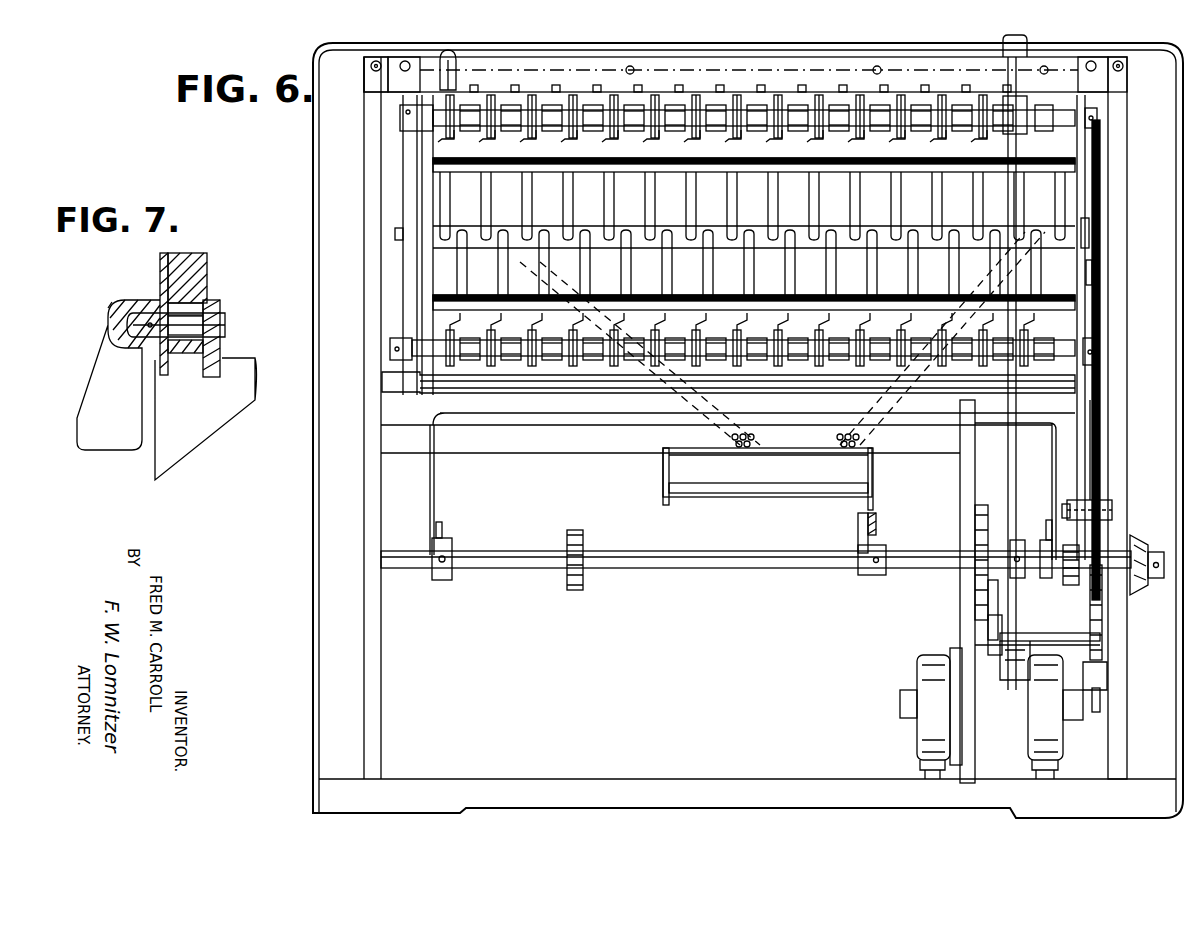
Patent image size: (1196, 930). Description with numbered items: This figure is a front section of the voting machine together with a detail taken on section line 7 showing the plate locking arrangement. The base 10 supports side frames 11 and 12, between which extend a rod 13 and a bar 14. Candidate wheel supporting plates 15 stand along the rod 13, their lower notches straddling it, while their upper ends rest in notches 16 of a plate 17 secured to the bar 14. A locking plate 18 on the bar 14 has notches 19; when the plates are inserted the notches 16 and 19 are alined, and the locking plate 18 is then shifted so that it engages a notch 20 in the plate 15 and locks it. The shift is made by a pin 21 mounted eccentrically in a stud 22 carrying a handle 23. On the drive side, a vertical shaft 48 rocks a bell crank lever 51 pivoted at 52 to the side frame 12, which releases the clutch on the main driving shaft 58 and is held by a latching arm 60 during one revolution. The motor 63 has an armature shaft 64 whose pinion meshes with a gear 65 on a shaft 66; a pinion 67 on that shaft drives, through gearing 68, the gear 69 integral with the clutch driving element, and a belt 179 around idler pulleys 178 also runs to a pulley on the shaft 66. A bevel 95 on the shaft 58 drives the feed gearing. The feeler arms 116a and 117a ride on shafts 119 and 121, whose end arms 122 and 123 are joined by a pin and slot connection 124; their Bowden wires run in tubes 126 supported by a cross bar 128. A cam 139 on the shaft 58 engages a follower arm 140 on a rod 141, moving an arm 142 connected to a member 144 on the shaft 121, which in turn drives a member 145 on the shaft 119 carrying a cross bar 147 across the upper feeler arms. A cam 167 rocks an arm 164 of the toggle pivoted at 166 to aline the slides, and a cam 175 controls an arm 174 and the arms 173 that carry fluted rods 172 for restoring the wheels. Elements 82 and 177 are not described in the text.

In FIG. 6, the section line 7— 7 is at (475, 34).
In FIG. 6, the base 10 is at (668, 795).
In FIG. 6, the side frame 11 is at (372, 425).
In FIG. 6, the side frame 12 is at (1118, 205).
In FIG. 6, the rod 13 is at (622, 383).
In FIG. 6, the bar 14 is at (372, 66).
In FIG. 7, the bar 14 is at (185, 265).
In FIG. 7, the candidate wheel supporting plate 15 is at (200, 430).
In FIG. 6, the notch 16 is at (658, 90).
In FIG. 6, the plate 17 is at (600, 75).
In FIG. 7, the plate 17 is at (158, 278).
In FIG. 7, the locking plate 18 is at (222, 312).
In FIG. 6, the notch 19 is at (540, 85).
In FIG. 7, the notch 20 is at (248, 368).
In FIG. 7, the pin 21 is at (228, 332).
In FIG. 7, the stud 22 is at (186, 355).
In FIG. 6, the handle 23 is at (455, 72).
In FIG. 7, the handle 23 is at (118, 390).
In FIG. 6, the vertical shaft 48 is at (1015, 455).
In FIG. 6, the bell crank lever 51 is at (1062, 640).
In FIG. 6, the pivot 52 is at (1103, 640).
In FIG. 6, the main driving shaft 58 is at (632, 568).
In FIG. 6, the latching arm 60 is at (1020, 648).
In FIG. 6, the motor 63 is at (917, 668).
In FIG. 6, the armature shaft 64 is at (1094, 712).
In FIG. 6, the gear 65 is at (1104, 616).
In FIG. 6, the shaft 66 is at (1030, 630).
In FIG. 6, the pinion 67 is at (985, 637).
In FIG. 6, the gearing 68 is at (975, 605).
In FIG. 6, the gear 69 is at (975, 520).
In FIG. 6, the bevel gear 82 is at (1142, 555).
In FIG. 6, the bevel gear 95 is at (580, 540).
In FIG. 6, the arm 116a is at (600, 230).
In FIG. 6, the arm 117a is at (478, 300).
In FIG. 6, the shaft 119 is at (1088, 118).
In FIG. 6, the shaft 121 is at (508, 375).
In FIG. 6, the arm 122 is at (400, 185).
In FIG. 6, the arm 123 is at (400, 298).
In FIG. 6, the pin and slot connection 124 is at (396, 235).
In FIG. 6, the tube 126 is at (690, 410).
In FIG. 6, the cross bar 128 is at (728, 433).
In FIG. 6, the cam 139 is at (1072, 585).
In FIG. 6, the follower arm 140 is at (1068, 538).
In FIG. 6, the rod 141 is at (1118, 510).
In FIG. 6, the arm 142 is at (1096, 445).
In FIG. 6, the member 144 is at (1092, 335).
In FIG. 6, the member 145 is at (1097, 145).
In FIG. 6, the cross bar 147 is at (405, 160).
In FIG. 6, the arm 164 is at (877, 518).
In FIG. 6, the pivot 166 is at (755, 488).
In FIG. 6, the cam 167 is at (868, 575).
In FIG. 6, the fluted rod 172 is at (708, 180).
In FIG. 6, the arm 173 is at (362, 215).
In FIG. 6, the arm 174 is at (436, 482).
In FIG. 6, the cam 175 is at (440, 535).
In FIG. 6, the bar 177 is at (1100, 170).
In FIG. 6, the idler pulley 178 is at (1092, 235).
In FIG. 6, the belt 179 is at (1092, 272).